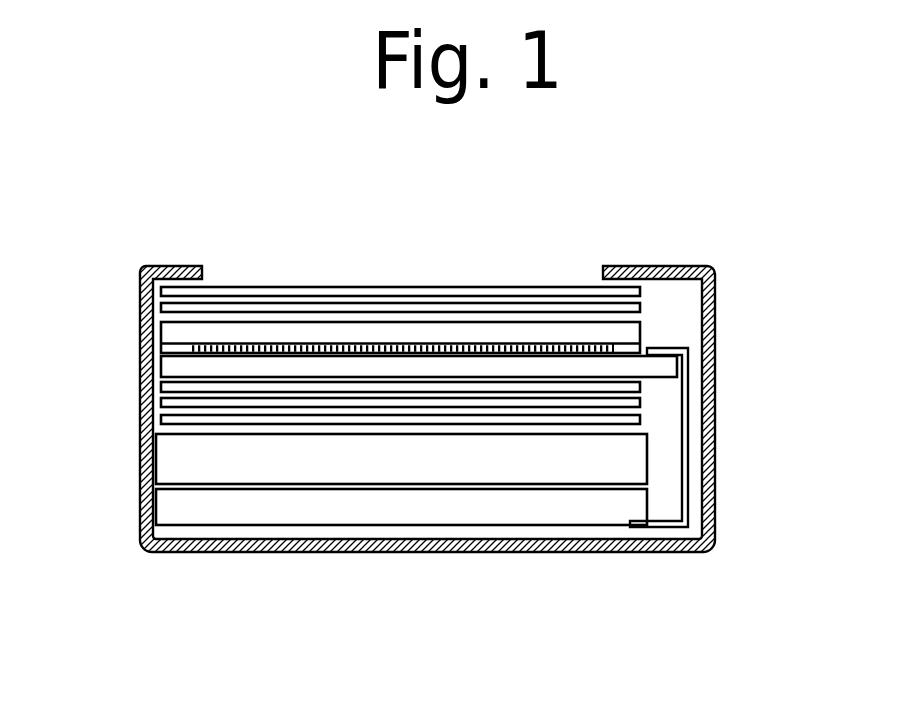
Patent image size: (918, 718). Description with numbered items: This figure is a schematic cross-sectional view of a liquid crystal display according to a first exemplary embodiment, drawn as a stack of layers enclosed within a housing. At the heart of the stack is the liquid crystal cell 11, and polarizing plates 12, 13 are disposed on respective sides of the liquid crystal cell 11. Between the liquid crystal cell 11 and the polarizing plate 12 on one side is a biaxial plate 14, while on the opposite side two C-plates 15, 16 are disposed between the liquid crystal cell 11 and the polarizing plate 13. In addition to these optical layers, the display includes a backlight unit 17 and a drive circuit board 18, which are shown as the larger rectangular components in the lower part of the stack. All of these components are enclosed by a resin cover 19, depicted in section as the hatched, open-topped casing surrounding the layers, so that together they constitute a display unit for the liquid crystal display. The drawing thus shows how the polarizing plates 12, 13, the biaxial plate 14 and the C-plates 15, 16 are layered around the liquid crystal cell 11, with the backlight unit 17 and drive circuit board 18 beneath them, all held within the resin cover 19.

The liquid crystal cell 11 is at (213, 348).
The polarizing plate 12 is at (548, 290).
The polarizing plate 13 is at (573, 420).
The biaxial plate 14 is at (427, 291).
The C-plate 15 is at (467, 385).
The C-plate 16 is at (322, 400).
The backlight unit 17 is at (212, 458).
The drive circuit board 18 is at (210, 510).
The resin cover 19 is at (710, 428).